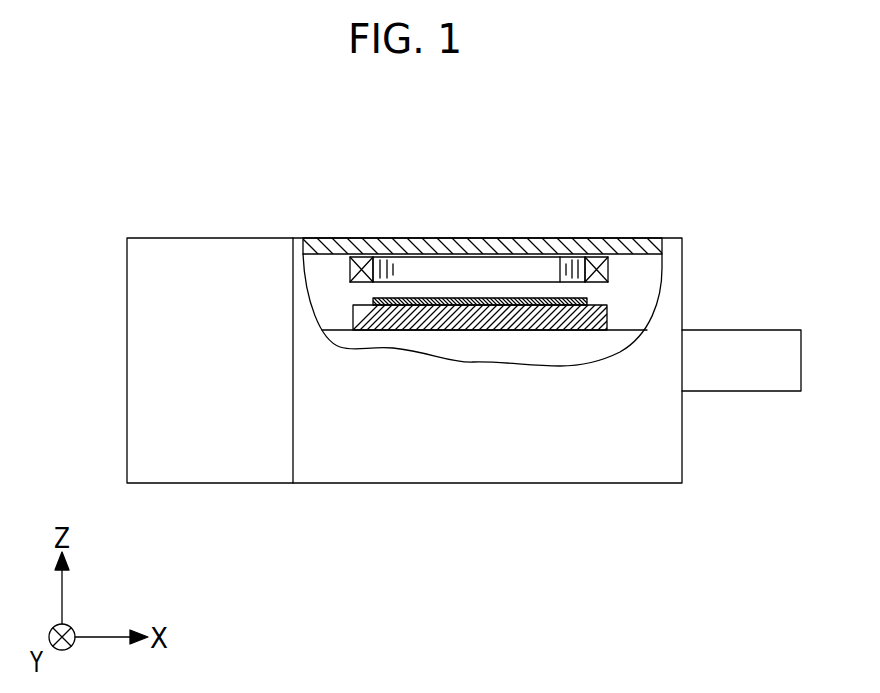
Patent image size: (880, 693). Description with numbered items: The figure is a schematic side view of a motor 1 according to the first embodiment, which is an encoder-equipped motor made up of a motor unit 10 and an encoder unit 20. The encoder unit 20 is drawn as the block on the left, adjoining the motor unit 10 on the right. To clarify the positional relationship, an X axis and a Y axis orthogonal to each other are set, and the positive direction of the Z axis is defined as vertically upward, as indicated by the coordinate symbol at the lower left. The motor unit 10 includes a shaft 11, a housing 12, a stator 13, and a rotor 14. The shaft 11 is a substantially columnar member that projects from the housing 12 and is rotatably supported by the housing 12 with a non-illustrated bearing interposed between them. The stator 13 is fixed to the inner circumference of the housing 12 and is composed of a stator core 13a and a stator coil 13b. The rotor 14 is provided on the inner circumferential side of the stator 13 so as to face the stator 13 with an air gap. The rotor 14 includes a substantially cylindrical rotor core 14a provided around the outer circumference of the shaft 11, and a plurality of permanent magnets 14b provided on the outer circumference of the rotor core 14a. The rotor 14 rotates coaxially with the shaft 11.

The motor 1 is at (768, 102).
The motor unit 10 is at (678, 215).
The shaft 11 is at (741, 340).
The housing 12 is at (640, 247).
The stator 13 is at (452, 189).
The stator core 13a is at (421, 257).
The stator coil 13b is at (367, 254).
The rotor 14 is at (602, 189).
The rotor core 14a is at (553, 312).
The permanent magnets 14b is at (512, 298).
The encoder unit 20 is at (207, 248).